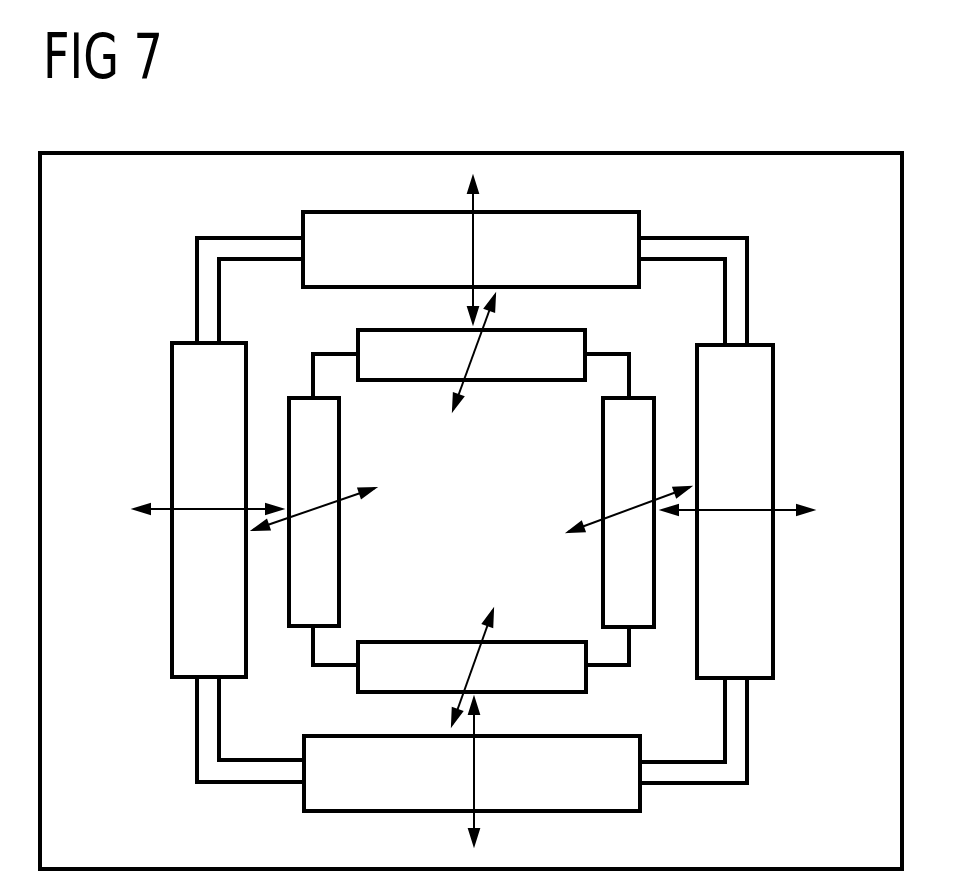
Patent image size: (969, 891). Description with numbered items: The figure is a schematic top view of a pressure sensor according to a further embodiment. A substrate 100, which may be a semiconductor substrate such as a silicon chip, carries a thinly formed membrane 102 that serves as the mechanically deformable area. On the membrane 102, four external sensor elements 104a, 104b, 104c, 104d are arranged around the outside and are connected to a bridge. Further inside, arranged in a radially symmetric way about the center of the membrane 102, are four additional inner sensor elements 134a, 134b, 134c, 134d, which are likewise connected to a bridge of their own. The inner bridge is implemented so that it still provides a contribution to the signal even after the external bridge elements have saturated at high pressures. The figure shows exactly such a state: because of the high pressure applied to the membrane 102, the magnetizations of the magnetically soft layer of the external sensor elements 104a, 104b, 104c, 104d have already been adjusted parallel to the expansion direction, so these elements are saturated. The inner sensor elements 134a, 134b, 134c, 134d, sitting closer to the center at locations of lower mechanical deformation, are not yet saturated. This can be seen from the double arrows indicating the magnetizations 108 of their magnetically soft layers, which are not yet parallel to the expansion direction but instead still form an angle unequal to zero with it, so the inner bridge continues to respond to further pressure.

The substrate 100 is at (729, 152).
The membrane 102 is at (500, 502).
The external sensor element 104a is at (641, 225).
The external sensor element 104b is at (170, 623).
The external sensor element 104c is at (642, 795).
The external sensor element 104d is at (775, 588).
The magnetization 108 is at (470, 192).
The inner sensor element 134a is at (585, 341).
The inner sensor element 134b is at (342, 603).
The inner sensor element 134c is at (540, 641).
The inner sensor element 134d is at (600, 410).